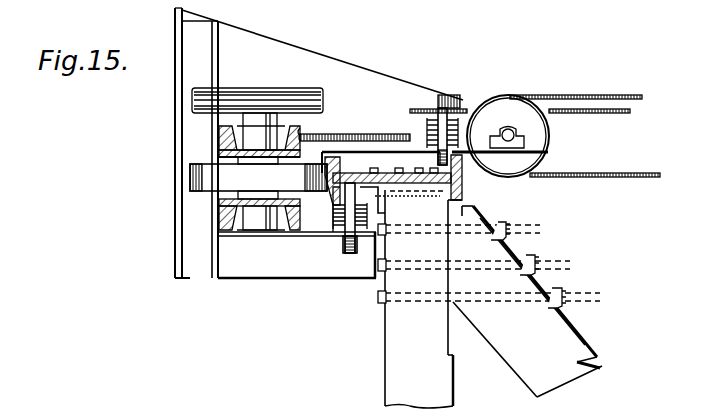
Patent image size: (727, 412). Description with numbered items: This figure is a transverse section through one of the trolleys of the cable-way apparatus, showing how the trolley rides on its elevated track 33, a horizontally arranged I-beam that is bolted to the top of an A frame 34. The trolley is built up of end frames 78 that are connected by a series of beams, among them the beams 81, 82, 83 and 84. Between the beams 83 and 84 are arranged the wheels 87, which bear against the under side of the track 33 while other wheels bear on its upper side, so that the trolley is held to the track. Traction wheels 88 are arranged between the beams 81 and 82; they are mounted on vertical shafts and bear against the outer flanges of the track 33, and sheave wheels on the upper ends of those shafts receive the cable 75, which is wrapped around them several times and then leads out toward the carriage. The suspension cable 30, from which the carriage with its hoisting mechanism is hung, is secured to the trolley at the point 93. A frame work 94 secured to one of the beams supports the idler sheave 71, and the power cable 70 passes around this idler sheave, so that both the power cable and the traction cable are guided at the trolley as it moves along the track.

The suspension cable 30 is at (378, 133).
The elevated tracks 33 is at (462, 184).
The A frames 34 is at (510, 366).
The power cable 70 is at (612, 94).
The idler sheave 71 is at (496, 100).
The cable 75 is at (630, 114).
The end frames 78 is at (195, 268).
The beam 81 is at (215, 137).
The beam 82 is at (292, 230).
The beam 83 is at (341, 233).
The beam 84 is at (378, 237).
The wheels 87 is at (352, 258).
The traction wheels 88 is at (190, 178).
The securing point of suspension cable 93 is at (313, 125).
The frame work 94 is at (548, 152).